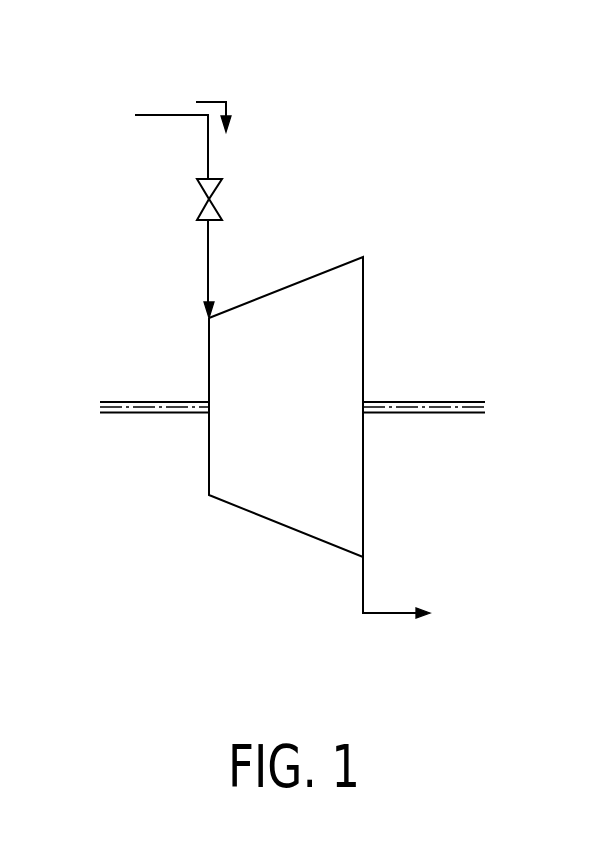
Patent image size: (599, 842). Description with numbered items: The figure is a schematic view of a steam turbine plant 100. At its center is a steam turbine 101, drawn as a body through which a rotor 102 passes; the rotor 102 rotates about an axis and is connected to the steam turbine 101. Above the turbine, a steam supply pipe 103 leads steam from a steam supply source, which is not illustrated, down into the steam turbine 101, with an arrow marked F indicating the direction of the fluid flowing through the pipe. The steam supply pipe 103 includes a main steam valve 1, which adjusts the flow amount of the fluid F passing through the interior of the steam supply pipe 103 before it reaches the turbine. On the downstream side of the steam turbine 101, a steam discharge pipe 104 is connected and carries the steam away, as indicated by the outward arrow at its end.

The main steam valve 1 is at (148, 191).
The steam turbine plant 100 is at (420, 144).
The steam turbine 101 is at (372, 345).
The rotor 102 is at (150, 417).
The steam supply pipe 103 is at (173, 112).
The steam discharge pipe 104 is at (383, 617).